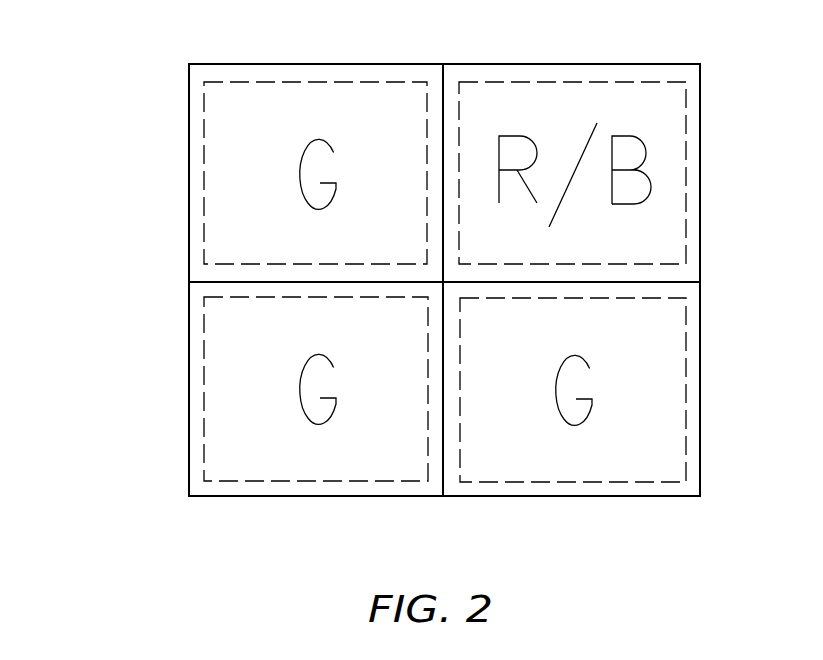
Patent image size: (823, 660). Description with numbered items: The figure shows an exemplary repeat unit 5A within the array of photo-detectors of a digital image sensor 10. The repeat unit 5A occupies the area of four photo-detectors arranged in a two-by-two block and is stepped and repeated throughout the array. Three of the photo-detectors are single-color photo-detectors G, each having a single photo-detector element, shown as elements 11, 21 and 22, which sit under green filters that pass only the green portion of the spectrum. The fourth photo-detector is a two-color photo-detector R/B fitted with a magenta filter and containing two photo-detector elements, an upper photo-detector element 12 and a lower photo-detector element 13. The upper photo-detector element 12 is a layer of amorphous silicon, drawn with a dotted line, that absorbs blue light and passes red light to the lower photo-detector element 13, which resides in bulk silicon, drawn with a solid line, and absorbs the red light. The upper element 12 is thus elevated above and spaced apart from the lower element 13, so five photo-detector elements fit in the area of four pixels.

The digital image sensor 10 is at (366, 280).
The repeat unit 5A is at (224, 506).
The single-color photo-detector element 11 is at (217, 220).
The upper photo-detector element 12 is at (672, 135).
The lower photo-detector element 13 is at (694, 235).
The single-color photo-detector element 21 is at (215, 402).
The single-color photo-detector element 22 is at (673, 448).